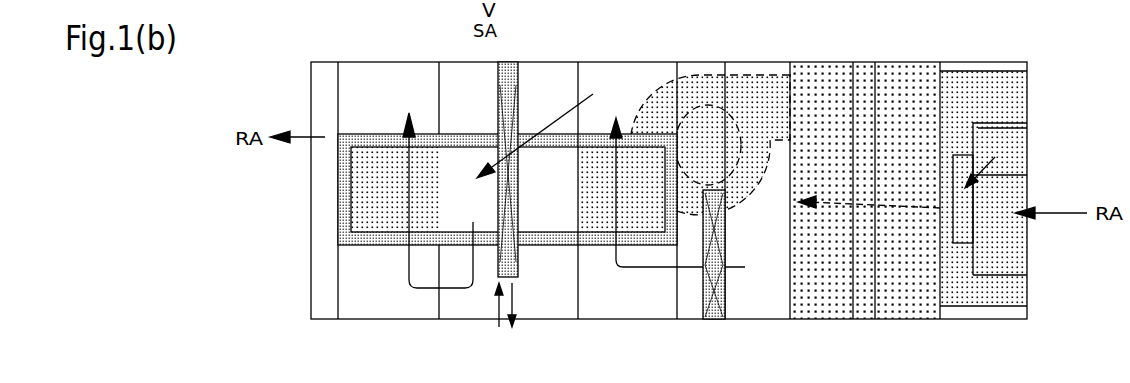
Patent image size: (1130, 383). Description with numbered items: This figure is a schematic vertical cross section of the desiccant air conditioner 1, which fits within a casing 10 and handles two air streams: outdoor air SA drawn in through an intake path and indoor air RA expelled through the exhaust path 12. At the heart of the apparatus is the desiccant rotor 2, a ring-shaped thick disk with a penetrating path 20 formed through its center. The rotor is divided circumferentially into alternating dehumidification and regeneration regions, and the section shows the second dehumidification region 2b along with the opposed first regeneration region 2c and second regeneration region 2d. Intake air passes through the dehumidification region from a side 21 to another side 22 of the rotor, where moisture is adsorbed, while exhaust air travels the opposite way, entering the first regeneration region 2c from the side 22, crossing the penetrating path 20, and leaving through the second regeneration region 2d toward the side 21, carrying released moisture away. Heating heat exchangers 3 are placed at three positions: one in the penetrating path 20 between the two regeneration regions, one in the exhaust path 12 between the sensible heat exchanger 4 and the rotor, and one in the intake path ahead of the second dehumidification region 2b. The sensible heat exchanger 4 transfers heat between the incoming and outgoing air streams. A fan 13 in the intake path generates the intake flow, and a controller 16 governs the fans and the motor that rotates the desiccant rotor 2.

The desiccant air conditioner 1 is at (263, 45).
The desiccant rotor 2 is at (369, 0).
The second dehumidification region 2b is at (445, 0).
The first regeneration region 2c is at (638, 218).
The second regeneration region 2d is at (358, 198).
The heating heat exchanger 3 is at (497, 267).
The sensible heat exchanger 4 is at (903, 0).
The casing 10 is at (310, 100).
The exhaust path 12 is at (1062, 217).
The fan 13 is at (657, 87).
The controller 16 is at (1022, 100).
The penetrating path 20 is at (578, 212).
The side 21 is at (373, 134).
The another side 22 is at (385, 245).